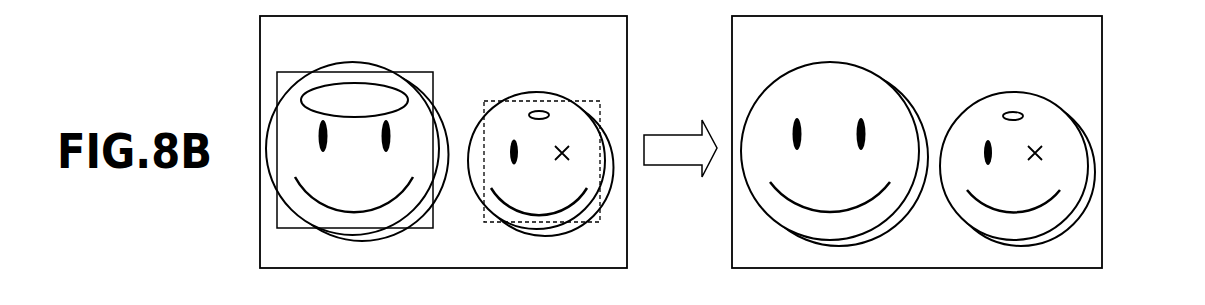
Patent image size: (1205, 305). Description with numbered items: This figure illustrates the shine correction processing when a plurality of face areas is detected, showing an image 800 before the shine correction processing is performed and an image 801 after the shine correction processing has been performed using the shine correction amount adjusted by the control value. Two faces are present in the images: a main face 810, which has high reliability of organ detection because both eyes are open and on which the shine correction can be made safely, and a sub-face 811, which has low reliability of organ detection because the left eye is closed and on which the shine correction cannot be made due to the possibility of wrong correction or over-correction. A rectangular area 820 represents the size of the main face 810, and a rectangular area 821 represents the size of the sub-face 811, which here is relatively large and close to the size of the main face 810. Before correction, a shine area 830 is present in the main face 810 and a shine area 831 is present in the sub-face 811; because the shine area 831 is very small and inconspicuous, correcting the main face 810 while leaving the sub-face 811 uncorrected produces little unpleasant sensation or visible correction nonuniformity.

The image 800 is at (627, 52).
The image 801 is at (1102, 52).
The main face 810 is at (268, 204).
The sub-face 811 is at (565, 86).
The rectangular area 820 is at (422, 72).
The rectangular area 821 is at (485, 222).
The shine area 830 is at (356, 88).
The shine area 831 is at (538, 111).